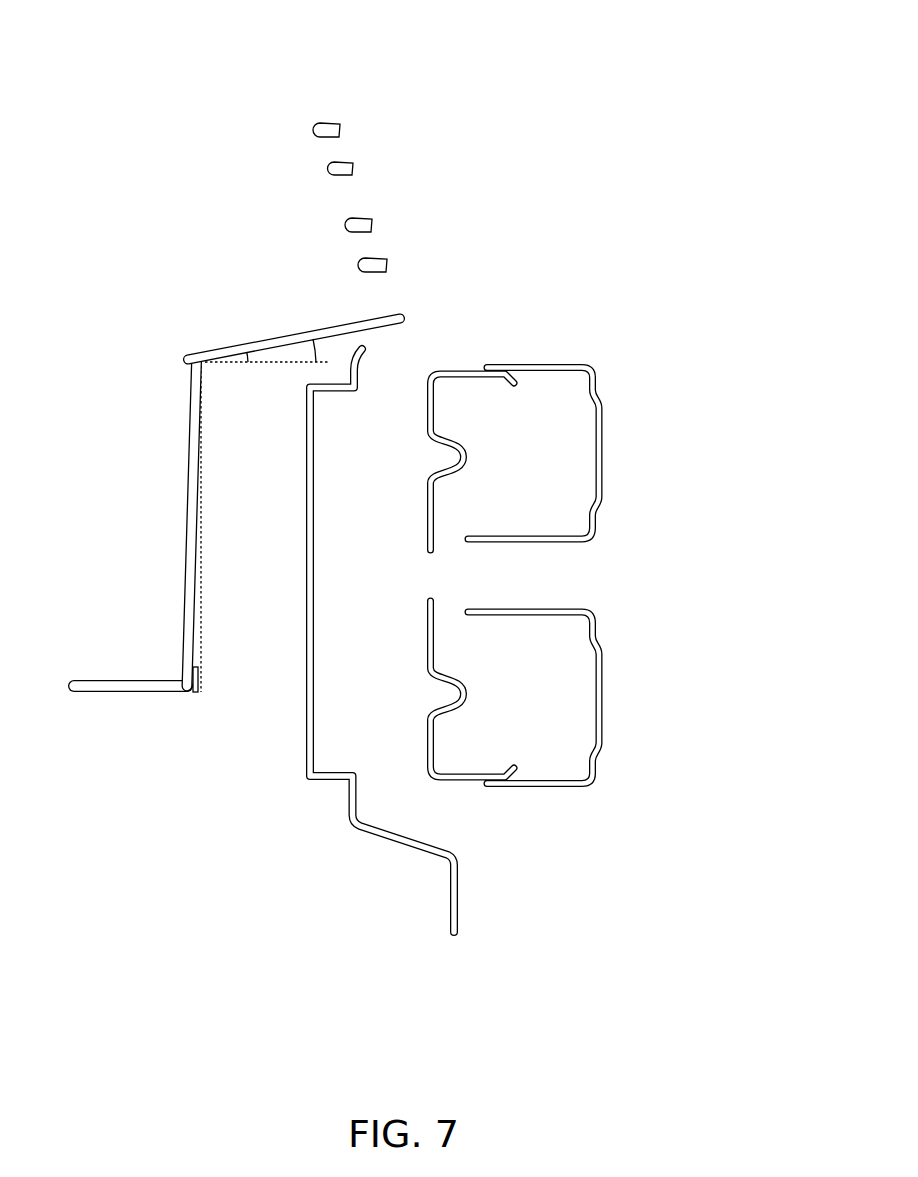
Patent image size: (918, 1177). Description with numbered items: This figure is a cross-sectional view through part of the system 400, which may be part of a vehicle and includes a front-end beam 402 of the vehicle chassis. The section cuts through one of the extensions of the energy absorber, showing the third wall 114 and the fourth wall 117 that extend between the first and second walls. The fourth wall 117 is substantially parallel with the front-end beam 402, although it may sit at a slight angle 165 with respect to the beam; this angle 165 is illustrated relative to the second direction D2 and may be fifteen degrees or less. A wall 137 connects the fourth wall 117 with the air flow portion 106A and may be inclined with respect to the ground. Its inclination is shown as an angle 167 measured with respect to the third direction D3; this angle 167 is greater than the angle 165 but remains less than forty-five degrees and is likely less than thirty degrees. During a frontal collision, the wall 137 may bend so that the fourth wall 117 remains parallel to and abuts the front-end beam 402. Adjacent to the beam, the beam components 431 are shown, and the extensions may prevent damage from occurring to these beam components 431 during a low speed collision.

The system 400 is at (545, 475).
The air flow portion 106A is at (410, 146).
The wall 137 is at (288, 335).
The angle 167 is at (307, 360).
The third direction D3 is at (248, 357).
The fourth wall 117 is at (186, 512).
The front-end beam 402 is at (313, 558).
The beam components 431 is at (604, 522).
The second direction D2 is at (203, 642).
The third wall 114 is at (130, 688).
The angle 165 is at (196, 695).